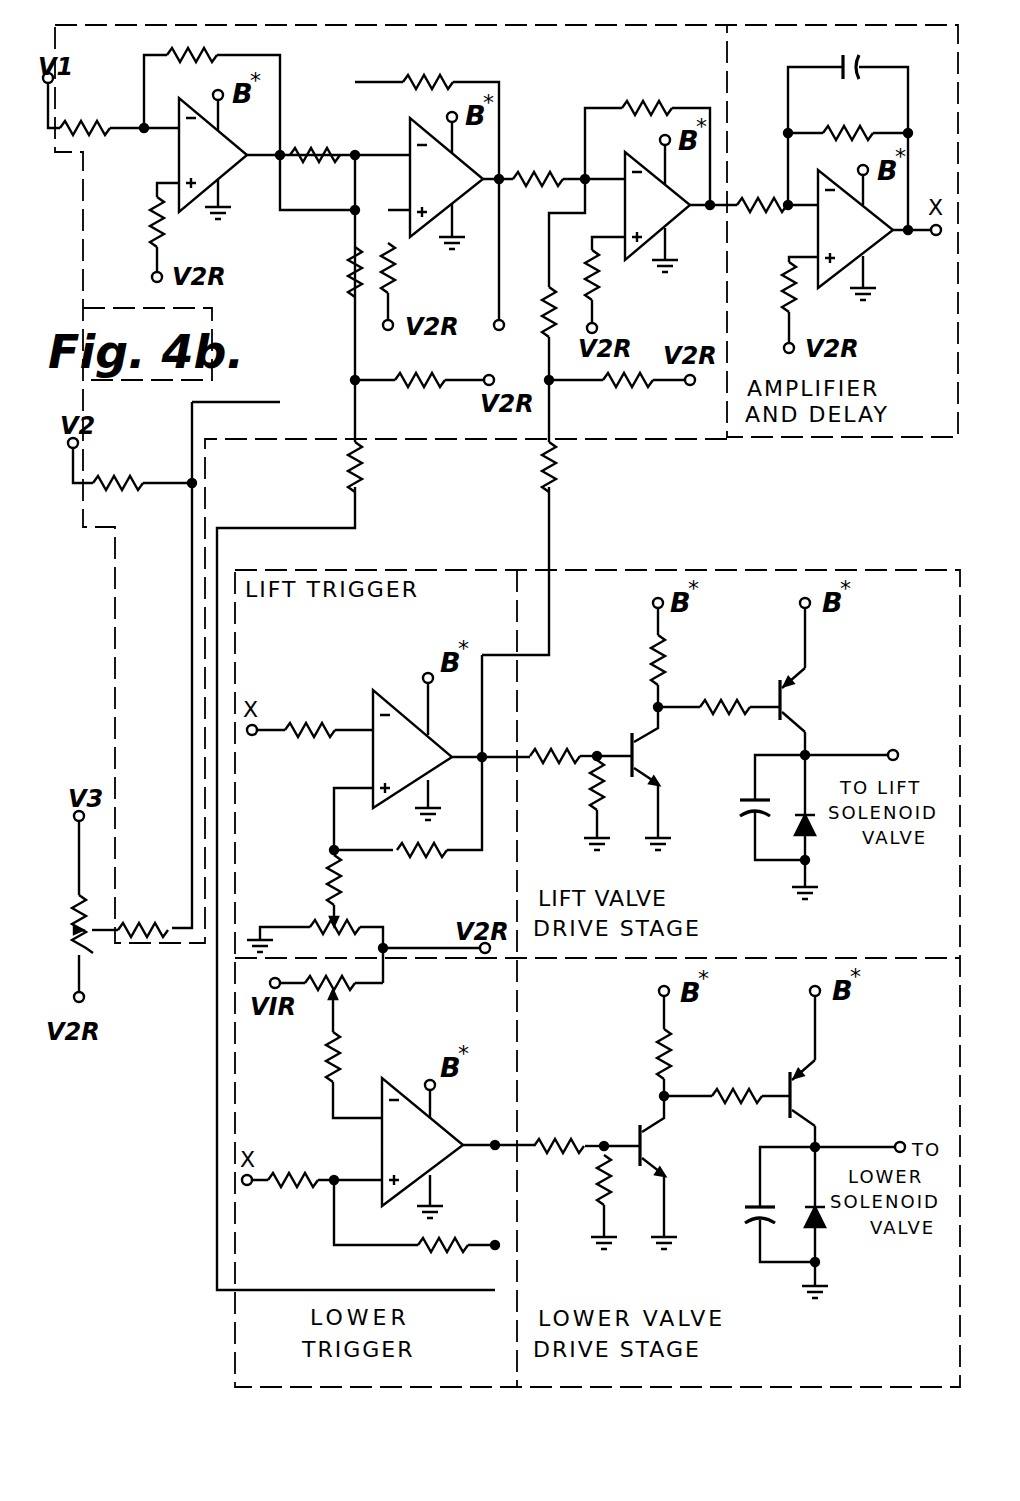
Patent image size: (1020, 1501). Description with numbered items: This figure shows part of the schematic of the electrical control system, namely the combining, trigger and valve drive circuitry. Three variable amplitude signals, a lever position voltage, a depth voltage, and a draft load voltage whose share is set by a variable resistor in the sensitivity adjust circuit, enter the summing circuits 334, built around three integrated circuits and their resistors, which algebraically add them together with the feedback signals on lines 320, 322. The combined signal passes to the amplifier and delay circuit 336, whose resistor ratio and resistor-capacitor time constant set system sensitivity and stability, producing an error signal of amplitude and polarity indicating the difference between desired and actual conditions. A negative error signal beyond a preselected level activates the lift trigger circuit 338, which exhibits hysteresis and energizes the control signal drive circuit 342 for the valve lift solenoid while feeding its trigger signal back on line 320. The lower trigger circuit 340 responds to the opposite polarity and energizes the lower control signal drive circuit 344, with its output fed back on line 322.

The feedback line 320 is at (549, 525).
The feedback line 322 is at (355, 510).
The summing circuits 334 is at (538, 38).
The amplifier and delay circuit 336 is at (727, 73).
The lift trigger circuit 338 is at (237, 655).
The lower trigger circuit 340 is at (237, 1085).
The control signal drive circuit 342 is at (958, 605).
The lower control signal drive circuit 344 is at (958, 1005).